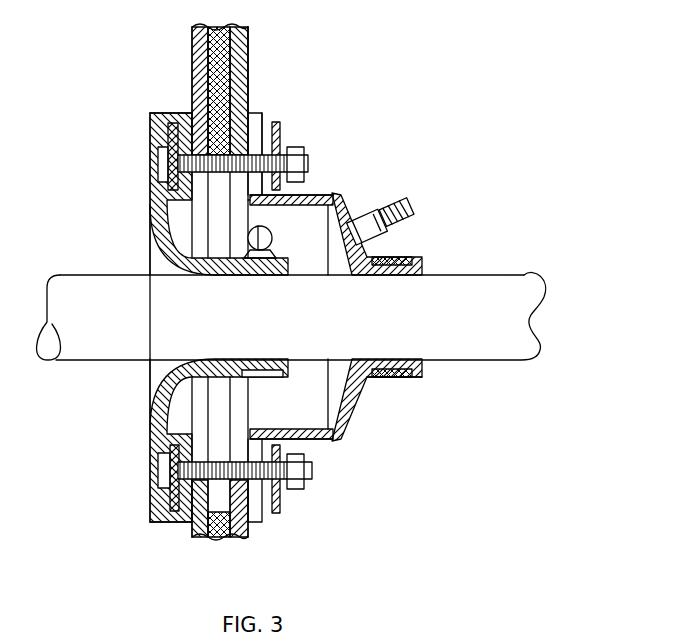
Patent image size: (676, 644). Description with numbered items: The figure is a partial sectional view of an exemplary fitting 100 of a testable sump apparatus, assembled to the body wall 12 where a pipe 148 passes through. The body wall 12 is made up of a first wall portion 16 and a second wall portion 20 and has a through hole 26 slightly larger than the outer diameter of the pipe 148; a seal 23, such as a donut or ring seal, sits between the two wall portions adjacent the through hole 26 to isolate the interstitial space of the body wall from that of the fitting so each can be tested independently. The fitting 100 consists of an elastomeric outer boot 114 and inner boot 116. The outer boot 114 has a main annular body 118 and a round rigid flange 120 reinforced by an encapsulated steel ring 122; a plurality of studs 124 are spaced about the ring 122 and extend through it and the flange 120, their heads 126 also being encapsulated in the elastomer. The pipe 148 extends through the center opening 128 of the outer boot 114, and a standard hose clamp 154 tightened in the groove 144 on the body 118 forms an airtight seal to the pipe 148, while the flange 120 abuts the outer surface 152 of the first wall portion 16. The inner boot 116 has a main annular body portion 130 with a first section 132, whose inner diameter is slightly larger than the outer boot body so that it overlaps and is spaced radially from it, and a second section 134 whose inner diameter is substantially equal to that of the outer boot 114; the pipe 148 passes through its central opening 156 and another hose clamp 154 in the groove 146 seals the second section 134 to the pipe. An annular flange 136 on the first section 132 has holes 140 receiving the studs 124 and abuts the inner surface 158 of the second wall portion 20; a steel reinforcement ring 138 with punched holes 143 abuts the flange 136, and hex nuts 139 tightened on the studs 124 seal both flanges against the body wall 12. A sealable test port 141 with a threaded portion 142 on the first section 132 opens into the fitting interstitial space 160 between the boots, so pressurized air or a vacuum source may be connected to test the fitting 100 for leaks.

The fitting 100 is at (470, 172).
The body wall 12 is at (282, 43).
The first wall portion 16 is at (205, 28).
The second wall portion 20 is at (250, 72).
The seal 23 is at (218, 82).
The through hole 26 is at (196, 420).
The outer boot 114 is at (146, 226).
The inner boot 116 is at (352, 190).
The main annular body 118 is at (224, 278).
The round rigid flange 120 is at (158, 192).
The steel ring 122 is at (168, 130).
The studs 124 is at (200, 110).
The heads 126 is at (157, 165).
The center opening 128 is at (170, 367).
The main annular body portion 130 is at (340, 190).
The first section 132 is at (327, 195).
The second section 134 is at (418, 264).
The annular flange 136 is at (263, 118).
The steel reinforcement ring 138 is at (280, 128).
The nuts 139 is at (306, 484).
The holes 140 is at (257, 113).
The test port 141 is at (402, 196).
The threaded portion 142 is at (412, 224).
The punched holes 143 is at (285, 488).
The groove 144 is at (278, 380).
The groove 146 is at (410, 378).
The pipe 148 is at (488, 362).
The outer surface 152 is at (192, 46).
The hose clamp 154 is at (272, 240).
The central opening 156 is at (328, 360).
The inner surface 158 is at (246, 30).
The fitting interstitial space 160 is at (313, 424).